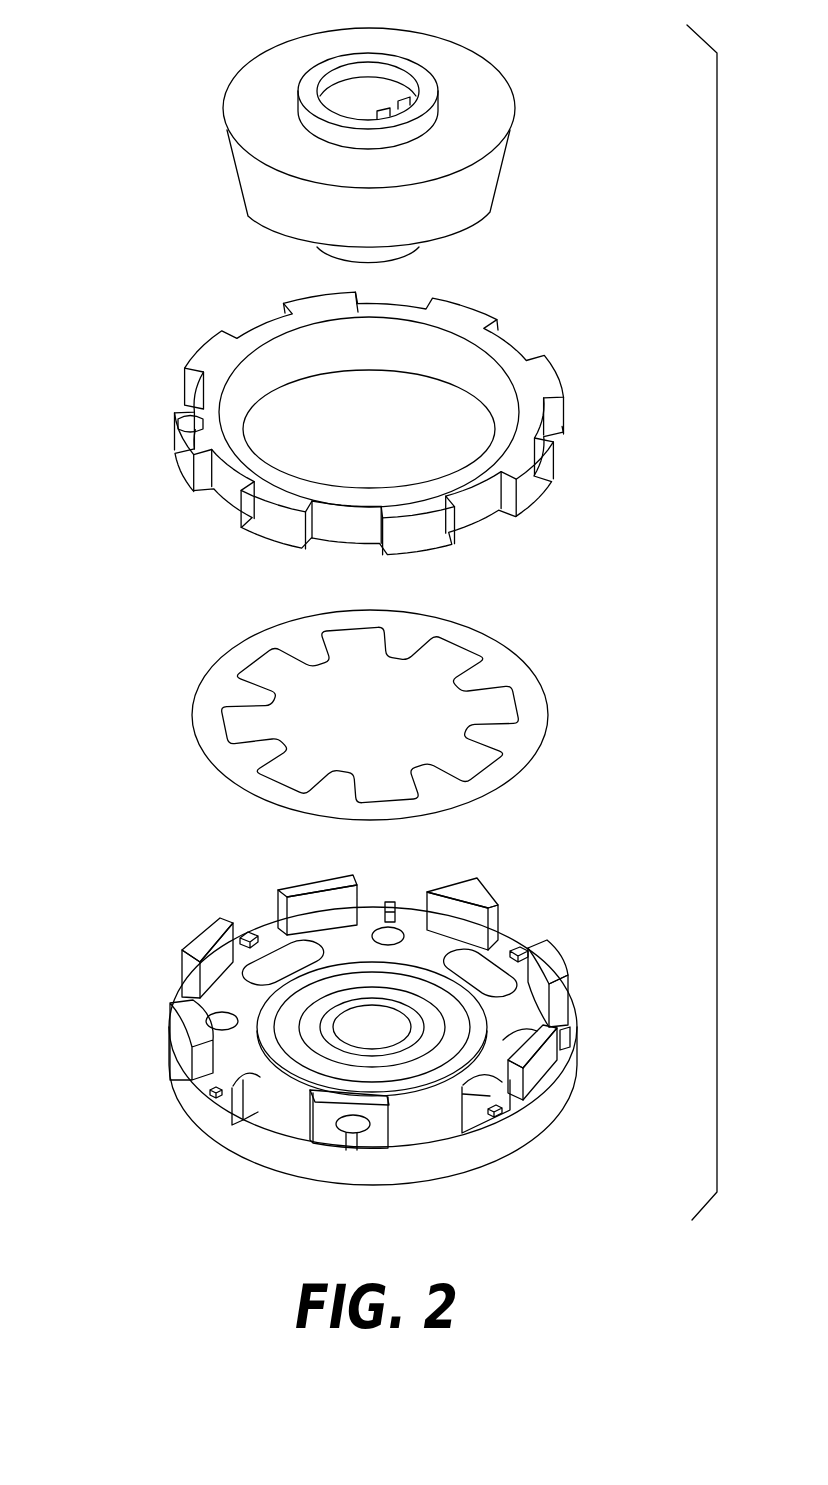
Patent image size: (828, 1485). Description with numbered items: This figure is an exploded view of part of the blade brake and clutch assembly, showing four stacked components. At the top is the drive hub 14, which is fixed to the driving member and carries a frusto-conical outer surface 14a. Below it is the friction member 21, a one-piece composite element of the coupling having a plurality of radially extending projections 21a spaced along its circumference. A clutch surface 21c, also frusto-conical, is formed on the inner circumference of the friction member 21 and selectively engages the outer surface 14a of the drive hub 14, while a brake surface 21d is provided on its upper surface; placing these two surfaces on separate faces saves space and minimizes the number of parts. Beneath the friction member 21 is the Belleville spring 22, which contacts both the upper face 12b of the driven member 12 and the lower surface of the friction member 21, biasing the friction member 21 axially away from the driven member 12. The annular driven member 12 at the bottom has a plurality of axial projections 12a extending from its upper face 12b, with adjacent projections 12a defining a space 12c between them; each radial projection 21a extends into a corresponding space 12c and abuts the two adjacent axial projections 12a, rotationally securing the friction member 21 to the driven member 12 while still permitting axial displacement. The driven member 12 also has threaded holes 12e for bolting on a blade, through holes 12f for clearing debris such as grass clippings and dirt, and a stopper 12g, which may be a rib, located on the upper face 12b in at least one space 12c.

The drive hub 14 is at (420, 145).
The frusto-conical outer surface 14a is at (241, 184).
The friction member 21 is at (383, 390).
The radial projections 21a is at (220, 340).
The clutch surface 21c is at (440, 348).
The brake surface 21d is at (200, 432).
The Belleville spring 22 is at (192, 716).
The driven member 12 is at (376, 1030).
The axial projections 12a is at (376, 1030).
The upper face 12b is at (232, 943).
The space 12c is at (265, 900).
The threaded holes 12e is at (352, 1152).
The through holes 12f is at (498, 1118).
The stopper 12g is at (207, 1093).